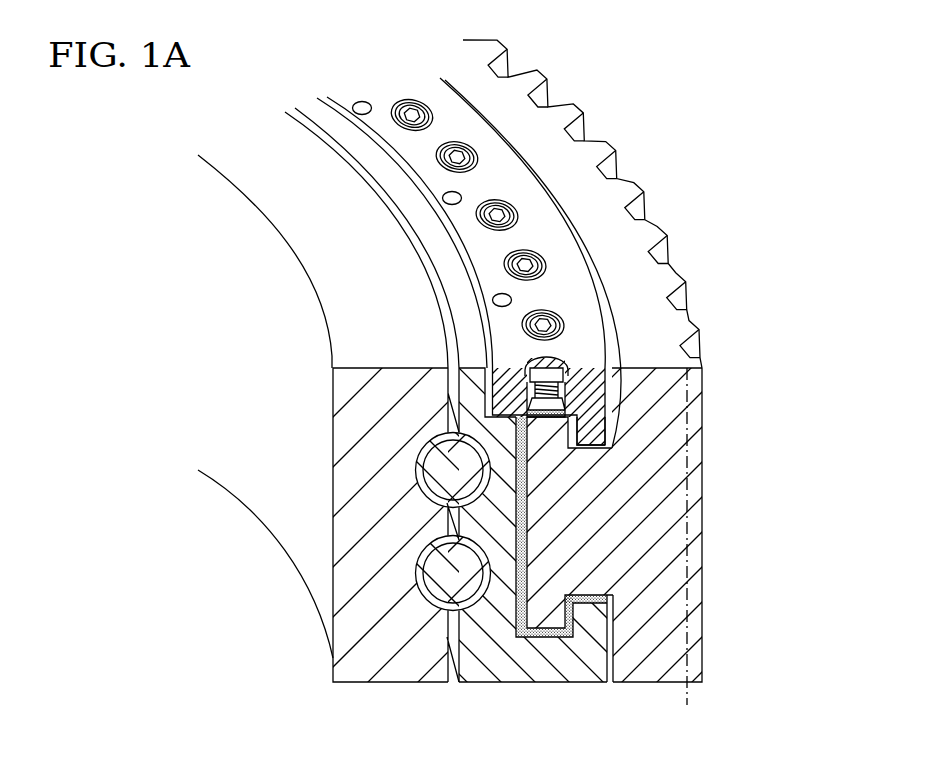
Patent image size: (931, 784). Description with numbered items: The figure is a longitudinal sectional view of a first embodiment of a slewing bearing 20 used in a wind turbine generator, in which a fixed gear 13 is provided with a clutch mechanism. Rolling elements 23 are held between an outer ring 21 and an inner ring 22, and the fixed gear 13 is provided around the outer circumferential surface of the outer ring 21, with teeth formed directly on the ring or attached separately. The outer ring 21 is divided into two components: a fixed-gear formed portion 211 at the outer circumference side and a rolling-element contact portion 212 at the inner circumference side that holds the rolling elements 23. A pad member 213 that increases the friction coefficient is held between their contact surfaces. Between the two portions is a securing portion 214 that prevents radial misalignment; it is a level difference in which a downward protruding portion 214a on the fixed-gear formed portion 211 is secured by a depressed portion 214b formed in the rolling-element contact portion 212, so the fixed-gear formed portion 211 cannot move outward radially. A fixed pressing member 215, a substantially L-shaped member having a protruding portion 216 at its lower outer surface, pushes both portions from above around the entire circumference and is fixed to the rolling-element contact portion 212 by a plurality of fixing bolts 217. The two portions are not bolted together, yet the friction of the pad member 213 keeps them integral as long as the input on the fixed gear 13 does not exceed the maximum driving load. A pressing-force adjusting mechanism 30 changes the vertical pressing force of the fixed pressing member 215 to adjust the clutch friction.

The slewing bearing 20 is at (698, 88).
The fixed gear 13 is at (690, 282).
The fixed pressing member 215 is at (503, 180).
The protruding portion 216 is at (597, 427).
The fixing bolt 217 is at (362, 100).
The pressing-force adjusting mechanism 30 is at (568, 350).
The rolling element 23 is at (437, 570).
The inner ring 22 is at (383, 681).
The outer ring 21 is at (472, 690).
The fixed-gear formed portion 211 is at (660, 683).
The rolling-element contact portion 212 is at (592, 683).
The pad member 213 is at (525, 568).
The securing portion 214 is at (533, 646).
The downward protruding portion 214a is at (550, 639).
The depressed portion 214b is at (574, 632).